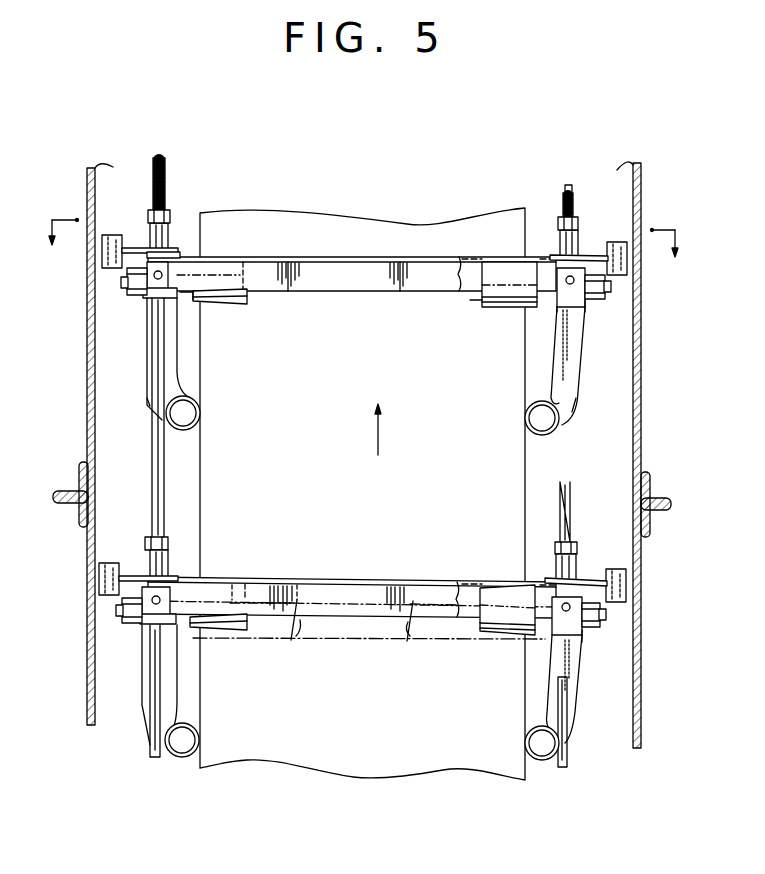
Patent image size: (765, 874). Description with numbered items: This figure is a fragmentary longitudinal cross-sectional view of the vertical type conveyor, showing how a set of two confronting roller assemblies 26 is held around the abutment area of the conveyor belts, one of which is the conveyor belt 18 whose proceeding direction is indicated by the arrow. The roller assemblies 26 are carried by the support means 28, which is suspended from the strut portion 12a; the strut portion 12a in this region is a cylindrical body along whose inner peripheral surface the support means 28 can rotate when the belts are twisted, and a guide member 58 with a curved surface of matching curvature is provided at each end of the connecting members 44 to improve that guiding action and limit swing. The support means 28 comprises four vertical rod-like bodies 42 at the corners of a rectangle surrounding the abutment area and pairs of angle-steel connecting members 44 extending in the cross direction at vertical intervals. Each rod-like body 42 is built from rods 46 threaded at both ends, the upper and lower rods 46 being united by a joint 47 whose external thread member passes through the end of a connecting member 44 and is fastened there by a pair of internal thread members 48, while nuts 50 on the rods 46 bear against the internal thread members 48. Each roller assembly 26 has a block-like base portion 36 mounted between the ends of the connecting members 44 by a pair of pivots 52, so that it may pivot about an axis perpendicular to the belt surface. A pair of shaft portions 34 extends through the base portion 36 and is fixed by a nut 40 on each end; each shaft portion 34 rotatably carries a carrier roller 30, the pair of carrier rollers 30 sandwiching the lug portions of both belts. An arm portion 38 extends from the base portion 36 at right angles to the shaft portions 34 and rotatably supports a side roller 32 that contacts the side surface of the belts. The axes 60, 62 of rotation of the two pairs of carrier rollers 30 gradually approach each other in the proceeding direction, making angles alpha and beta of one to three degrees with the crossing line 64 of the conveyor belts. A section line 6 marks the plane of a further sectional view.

The section line 6- 6 is at (363, 254).
The strut portion 12a is at (88, 358).
The conveyor belt 18 is at (369, 441).
The roller assembly 26 is at (146, 376).
The support means 28 is at (279, 252).
The carrier roller 30 is at (243, 304).
The side roller 32 is at (199, 404).
The shaft portion 34 is at (183, 299).
The base portion 36 is at (146, 312).
The arm portion 38 is at (148, 403).
The nut 40 is at (128, 294).
The rod-like body 42 is at (161, 514).
The connecting member 44 is at (358, 293).
The rod 46 is at (152, 470).
The joint 47 is at (163, 210).
The internal thread member 48 is at (580, 235).
The nut 50 is at (576, 213).
The pivot 52 is at (161, 258).
The guide member 58 is at (113, 236).
The axis of rotation 60 is at (425, 603).
The axis of rotation 62 is at (240, 600).
The crossing line 64 is at (300, 642).